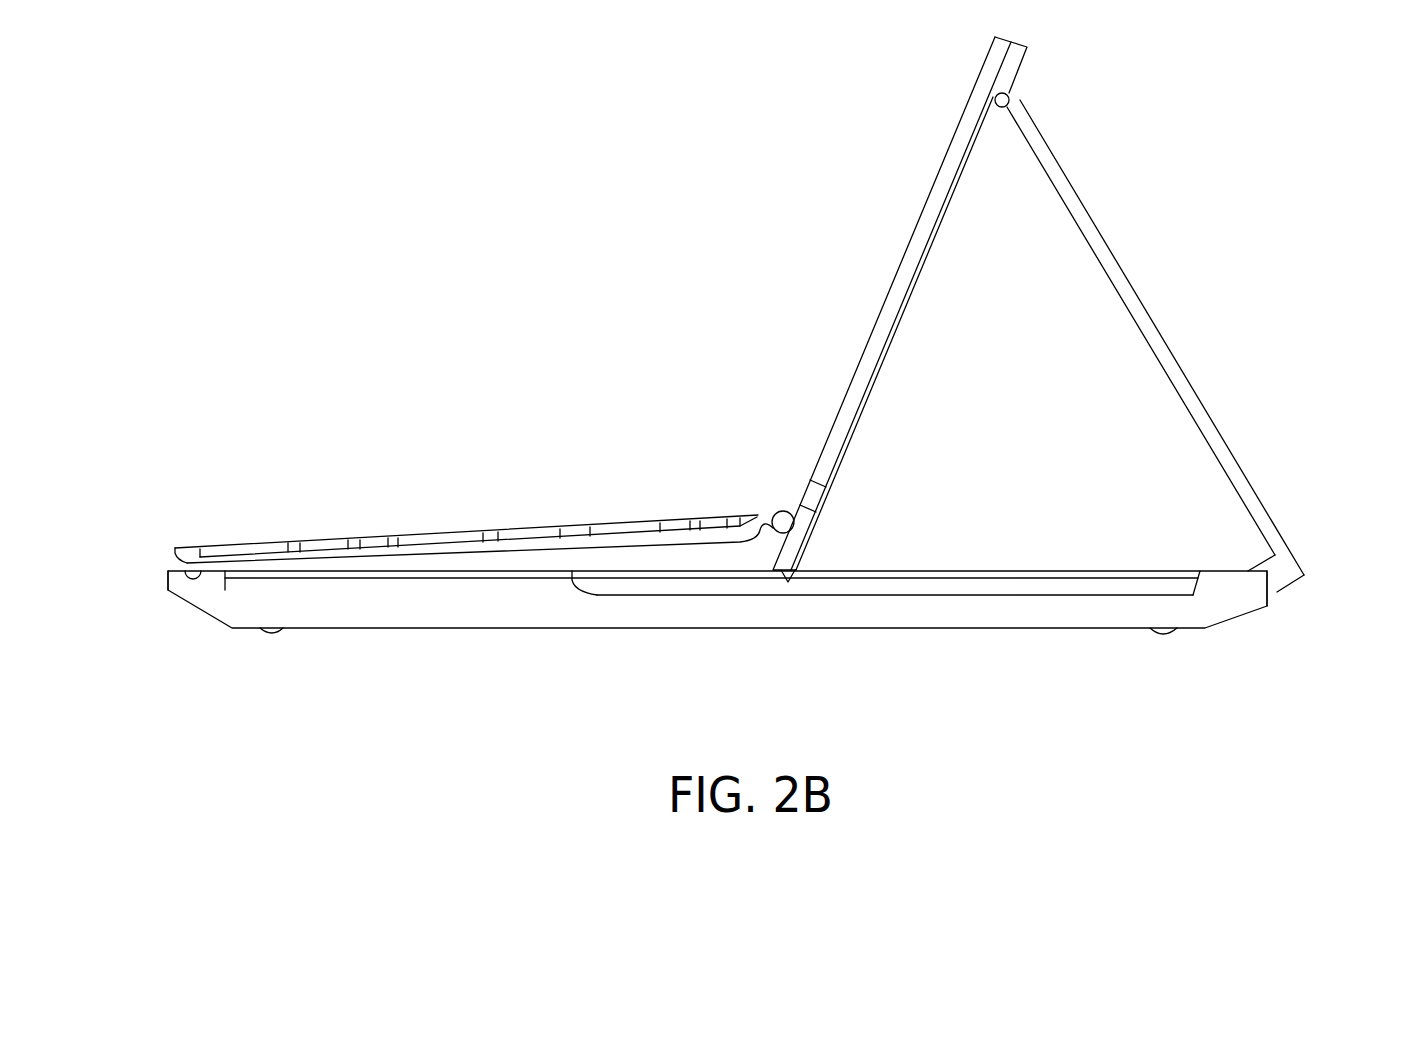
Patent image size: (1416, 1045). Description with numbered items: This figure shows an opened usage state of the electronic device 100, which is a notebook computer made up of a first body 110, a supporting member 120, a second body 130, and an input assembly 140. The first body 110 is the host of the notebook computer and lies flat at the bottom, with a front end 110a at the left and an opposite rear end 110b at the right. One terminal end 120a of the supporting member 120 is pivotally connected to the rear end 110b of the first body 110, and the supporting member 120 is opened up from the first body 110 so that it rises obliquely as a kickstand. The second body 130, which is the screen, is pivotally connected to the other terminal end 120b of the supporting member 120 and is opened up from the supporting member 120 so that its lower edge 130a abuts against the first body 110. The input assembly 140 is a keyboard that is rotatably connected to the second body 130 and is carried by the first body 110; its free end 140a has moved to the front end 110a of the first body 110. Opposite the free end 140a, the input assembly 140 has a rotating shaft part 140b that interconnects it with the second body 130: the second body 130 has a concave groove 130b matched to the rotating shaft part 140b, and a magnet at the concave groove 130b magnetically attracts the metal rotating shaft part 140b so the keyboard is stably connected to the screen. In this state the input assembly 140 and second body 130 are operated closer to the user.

The electronic device 100 is at (1360, 705).
The first body 110 is at (845, 602).
The front end 110a is at (152, 578).
The rear end 110b is at (1283, 603).
The supporting member 120 is at (1134, 290).
The terminal end 120a is at (1315, 548).
The other terminal end 120b is at (1025, 97).
The second body 130 is at (924, 212).
The lower edge 130a is at (788, 598).
The concave groove 130b is at (810, 521).
The input assembly 140 is at (357, 553).
The free end 140a is at (160, 538).
The rotating shaft part 140b is at (781, 511).